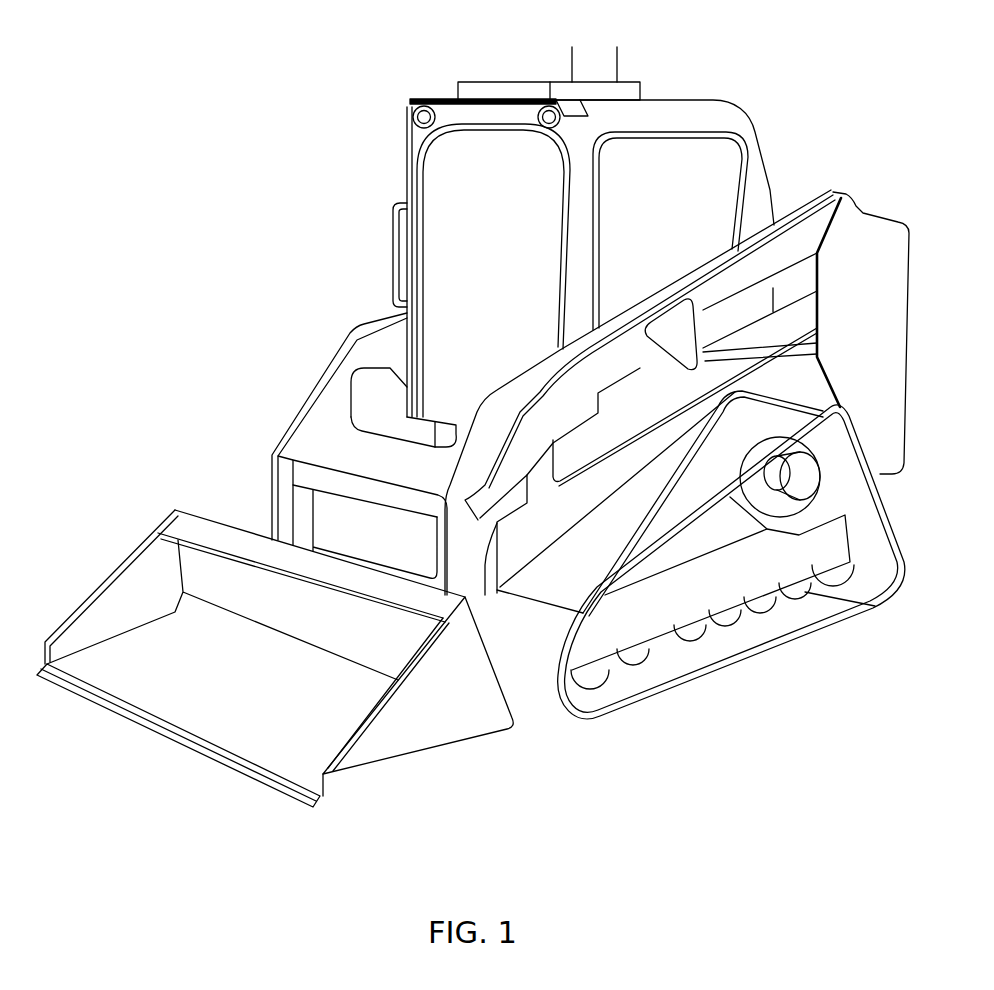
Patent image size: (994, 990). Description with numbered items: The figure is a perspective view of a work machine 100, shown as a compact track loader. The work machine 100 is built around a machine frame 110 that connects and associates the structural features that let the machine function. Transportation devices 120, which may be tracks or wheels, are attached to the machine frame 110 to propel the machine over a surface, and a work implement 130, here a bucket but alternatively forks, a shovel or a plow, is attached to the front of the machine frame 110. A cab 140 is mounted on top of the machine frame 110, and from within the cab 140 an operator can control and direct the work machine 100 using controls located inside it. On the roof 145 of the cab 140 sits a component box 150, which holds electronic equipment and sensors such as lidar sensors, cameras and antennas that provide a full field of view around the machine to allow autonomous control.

The work machine 100 is at (178, 196).
The machine frame 110 is at (778, 375).
The transportation devices 120 is at (752, 661).
The work implement 130 is at (435, 730).
The cab 140 is at (725, 178).
The roof 145 is at (678, 100).
The component box 150 is at (506, 81).